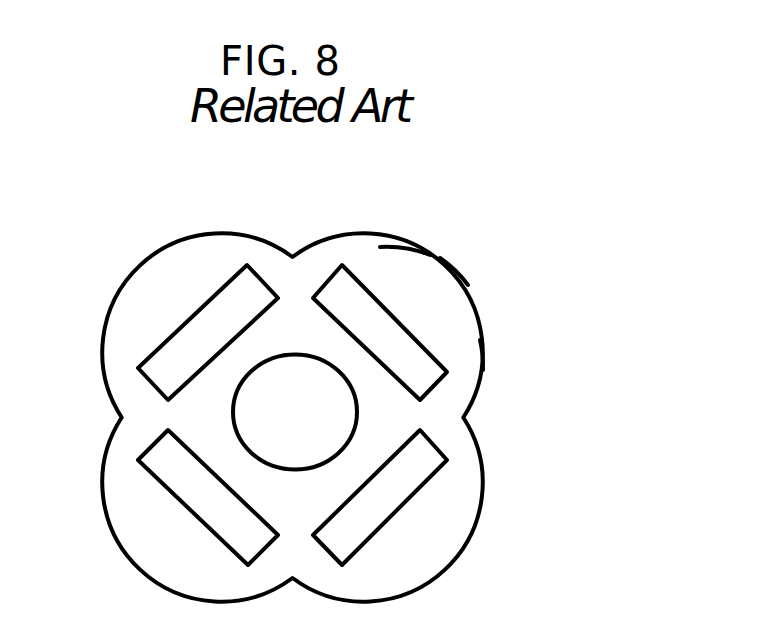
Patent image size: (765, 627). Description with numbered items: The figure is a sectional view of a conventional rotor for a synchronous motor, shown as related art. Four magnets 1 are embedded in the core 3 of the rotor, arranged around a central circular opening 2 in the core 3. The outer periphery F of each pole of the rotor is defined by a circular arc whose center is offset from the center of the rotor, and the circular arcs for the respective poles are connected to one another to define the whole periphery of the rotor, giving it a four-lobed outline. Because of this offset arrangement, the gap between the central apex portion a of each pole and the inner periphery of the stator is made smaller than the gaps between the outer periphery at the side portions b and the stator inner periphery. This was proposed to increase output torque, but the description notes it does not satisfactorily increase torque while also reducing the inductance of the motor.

The magnet 1 is at (188, 342).
The shaft hole 2 is at (297, 368).
The core 3 is at (470, 460).
The outer periphery F is at (407, 242).
The central portion a is at (453, 266).
The side portion b is at (483, 355).